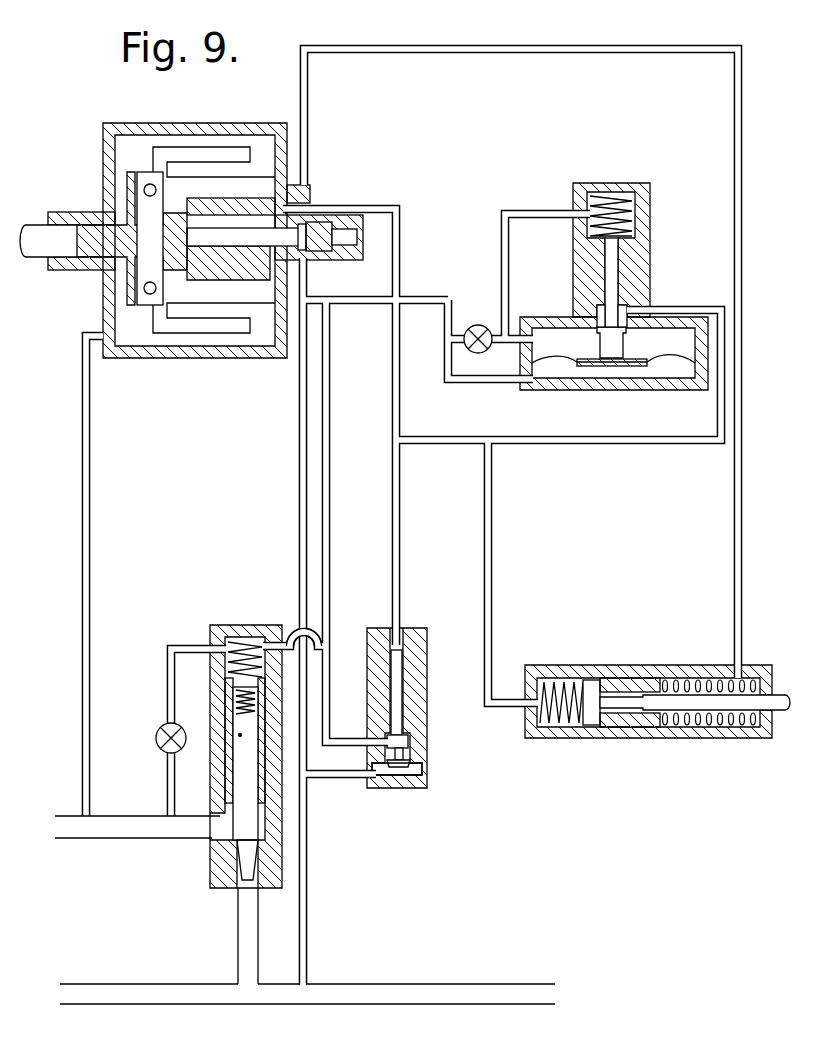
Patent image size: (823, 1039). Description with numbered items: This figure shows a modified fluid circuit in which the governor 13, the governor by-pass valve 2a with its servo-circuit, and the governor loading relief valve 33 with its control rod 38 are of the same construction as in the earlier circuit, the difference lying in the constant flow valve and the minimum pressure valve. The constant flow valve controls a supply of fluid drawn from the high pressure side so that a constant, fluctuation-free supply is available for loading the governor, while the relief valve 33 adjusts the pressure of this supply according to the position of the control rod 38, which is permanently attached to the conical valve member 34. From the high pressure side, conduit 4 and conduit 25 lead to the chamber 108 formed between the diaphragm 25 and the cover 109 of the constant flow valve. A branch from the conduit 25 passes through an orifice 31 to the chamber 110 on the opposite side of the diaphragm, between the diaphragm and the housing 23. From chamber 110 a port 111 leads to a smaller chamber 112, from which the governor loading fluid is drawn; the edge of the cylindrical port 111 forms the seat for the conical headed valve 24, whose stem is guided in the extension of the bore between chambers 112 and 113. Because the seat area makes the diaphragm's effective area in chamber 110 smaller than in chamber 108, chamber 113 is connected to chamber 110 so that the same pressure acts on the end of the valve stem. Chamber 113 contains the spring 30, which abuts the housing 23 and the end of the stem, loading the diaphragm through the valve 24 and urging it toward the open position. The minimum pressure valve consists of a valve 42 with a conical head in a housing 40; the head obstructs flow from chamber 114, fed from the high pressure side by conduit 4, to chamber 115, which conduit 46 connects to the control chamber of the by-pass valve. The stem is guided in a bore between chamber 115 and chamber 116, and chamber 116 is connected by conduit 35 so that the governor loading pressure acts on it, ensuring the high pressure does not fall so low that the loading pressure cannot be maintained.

The governor 13 is at (213, 157).
The governor by-pass valve 2a is at (243, 818).
The conduit 4 is at (299, 492).
The conduit 25 is at (440, 297).
The orifice 31 is at (478, 325).
The spring 30 is at (606, 203).
The chamber 113 is at (597, 243).
The conical headed valve 24 is at (612, 262).
The constant flow valve housing 23 is at (640, 272).
The smaller chamber 112 is at (600, 315).
The port 111 is at (630, 320).
The chamber 110 is at (635, 342).
The cover 109 is at (533, 383).
The chamber 108 is at (614, 368).
The conduit 35 is at (453, 444).
The conical valve member 34 is at (489, 553).
The chamber 116 is at (405, 637).
The minimum pressure valve housing 40 is at (425, 665).
The conduit 46 is at (336, 741).
The valve 42 is at (400, 722).
The chamber 115 is at (412, 750).
The chamber 114 is at (413, 786).
The governor loading relief valve 33 is at (622, 666).
The control rod 38 is at (779, 710).